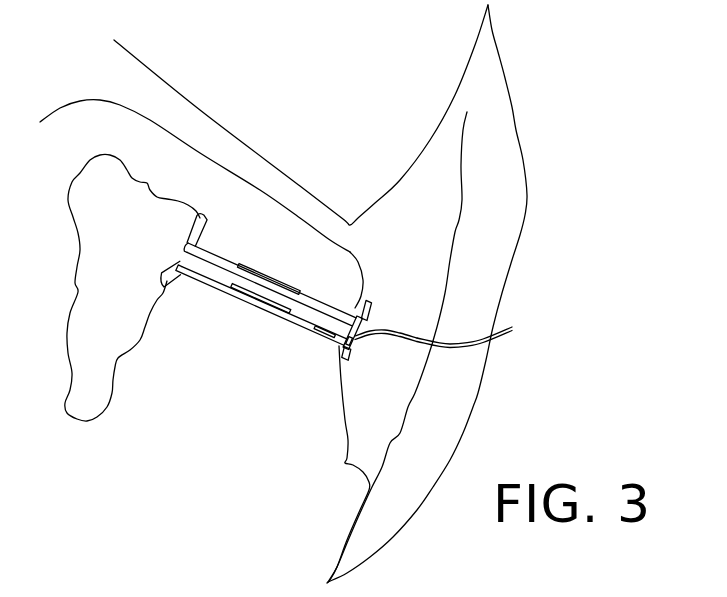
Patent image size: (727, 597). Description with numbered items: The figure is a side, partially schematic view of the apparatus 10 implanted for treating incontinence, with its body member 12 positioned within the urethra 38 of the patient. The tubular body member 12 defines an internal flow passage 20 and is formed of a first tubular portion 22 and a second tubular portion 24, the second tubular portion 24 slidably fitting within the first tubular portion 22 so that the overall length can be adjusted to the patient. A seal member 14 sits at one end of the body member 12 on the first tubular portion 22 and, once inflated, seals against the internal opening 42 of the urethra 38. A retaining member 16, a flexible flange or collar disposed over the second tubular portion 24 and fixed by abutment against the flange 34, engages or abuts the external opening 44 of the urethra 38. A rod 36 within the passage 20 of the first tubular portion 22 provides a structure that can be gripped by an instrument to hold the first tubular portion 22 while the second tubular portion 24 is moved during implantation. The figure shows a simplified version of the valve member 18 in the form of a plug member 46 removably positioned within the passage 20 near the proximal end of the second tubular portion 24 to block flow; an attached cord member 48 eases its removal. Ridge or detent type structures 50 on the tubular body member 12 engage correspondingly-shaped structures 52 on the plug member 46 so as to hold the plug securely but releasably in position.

The apparatus 10 is at (240, 318).
The tubular body member 12 is at (280, 276).
The seal member 14 is at (201, 215).
The retaining member 16 is at (348, 356).
The valve member 18 is at (330, 352).
The flow passage 20 is at (241, 264).
The first tubular portion 22 is at (206, 280).
The second tubular portion 24 is at (319, 293).
The flange 34 is at (352, 347).
The rod 36 is at (184, 247).
The urethra 38 is at (220, 246).
The internal opening 42 is at (165, 283).
The external opening 44 is at (366, 302).
The plug member 46 is at (364, 330).
The cord member 48 is at (449, 348).
The ridge or detent type structures 50 is at (325, 336).
The correspondingly-shaped structures 52 is at (318, 323).